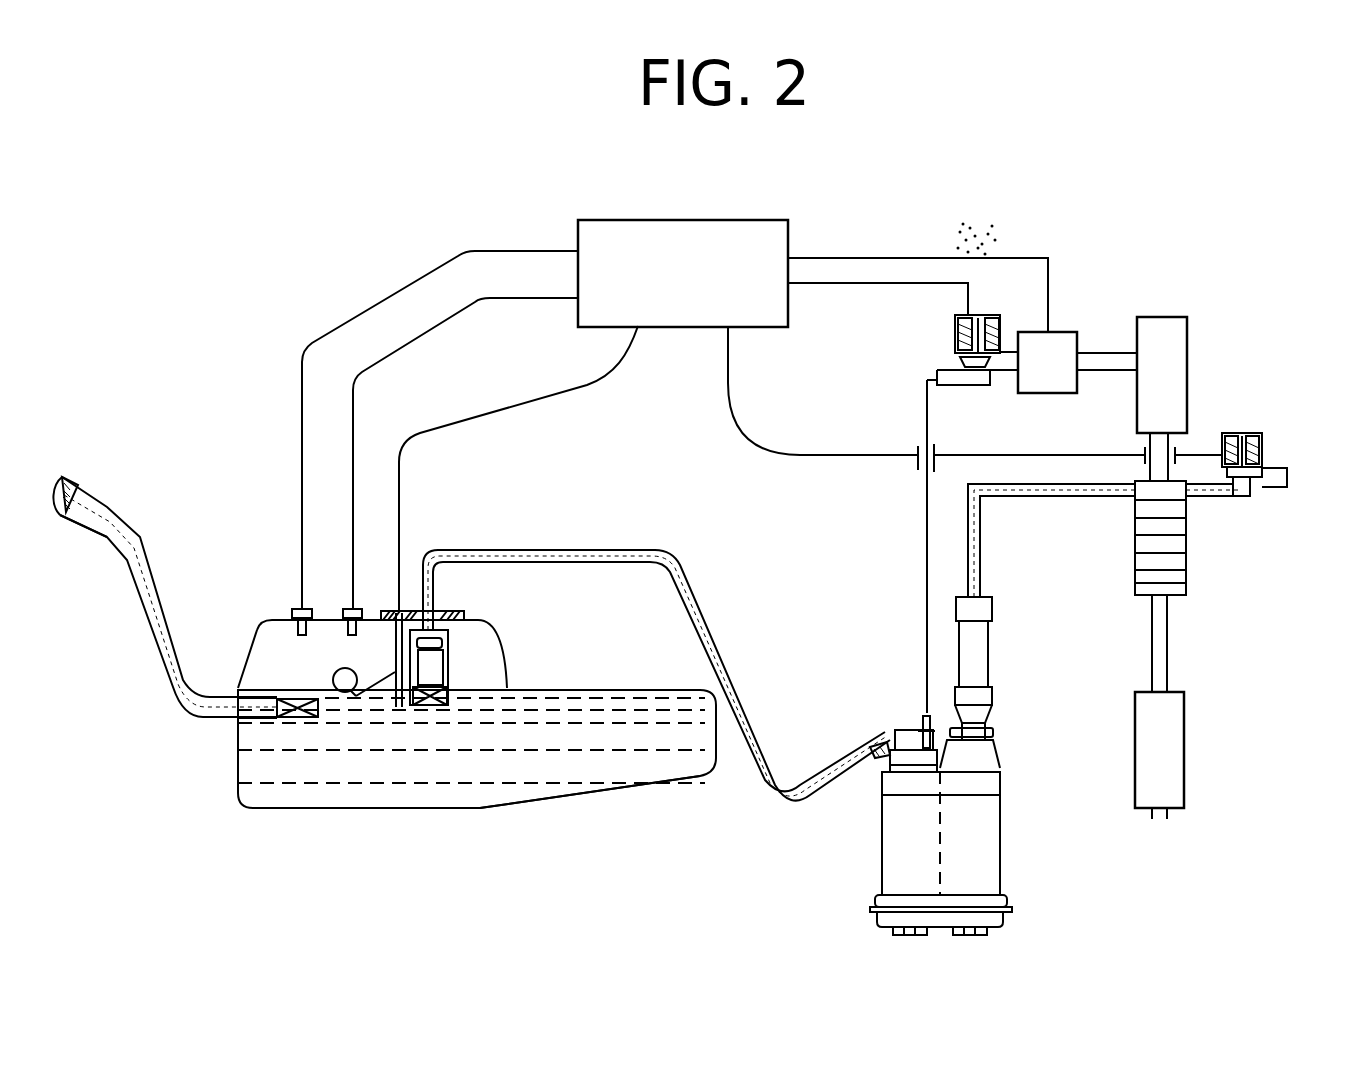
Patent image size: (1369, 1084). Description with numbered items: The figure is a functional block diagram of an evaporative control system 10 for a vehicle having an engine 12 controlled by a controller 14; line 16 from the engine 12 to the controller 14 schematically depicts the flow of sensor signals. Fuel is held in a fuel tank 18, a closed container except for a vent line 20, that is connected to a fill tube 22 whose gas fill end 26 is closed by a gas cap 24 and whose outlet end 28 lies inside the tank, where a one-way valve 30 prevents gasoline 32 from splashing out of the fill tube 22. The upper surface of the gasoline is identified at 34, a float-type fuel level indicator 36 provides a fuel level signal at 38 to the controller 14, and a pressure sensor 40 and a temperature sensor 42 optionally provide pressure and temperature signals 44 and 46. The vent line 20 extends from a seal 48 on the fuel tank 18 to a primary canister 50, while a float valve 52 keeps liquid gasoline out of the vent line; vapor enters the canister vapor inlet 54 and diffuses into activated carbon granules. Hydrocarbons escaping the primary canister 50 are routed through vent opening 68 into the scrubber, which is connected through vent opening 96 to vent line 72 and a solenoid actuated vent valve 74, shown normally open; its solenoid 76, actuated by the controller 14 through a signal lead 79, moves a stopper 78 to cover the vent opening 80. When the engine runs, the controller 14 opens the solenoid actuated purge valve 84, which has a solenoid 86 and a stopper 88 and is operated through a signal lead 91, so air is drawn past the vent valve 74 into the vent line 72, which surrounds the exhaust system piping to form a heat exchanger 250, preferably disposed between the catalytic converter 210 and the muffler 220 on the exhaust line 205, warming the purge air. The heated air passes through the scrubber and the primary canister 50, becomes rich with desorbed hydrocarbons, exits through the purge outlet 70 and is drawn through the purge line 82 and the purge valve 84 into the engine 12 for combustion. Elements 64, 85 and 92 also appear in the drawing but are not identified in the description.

The evaporative control system 10 is at (263, 352).
The engine 12 is at (1067, 340).
The controller 14 is at (780, 240).
The line 16 is at (997, 255).
The fuel tank 18 is at (617, 692).
The vent line 20 is at (565, 546).
The fill tube 22 is at (178, 630).
The gas cap 24 is at (62, 477).
The gas fill end 26 is at (80, 527).
The outlet end 28 is at (290, 720).
The one-way valve 30 is at (250, 712).
The gasoline 32 is at (668, 767).
The upper surface of the gasoline 34 is at (503, 685).
The float-type fuel level indicator 36 is at (338, 677).
The fuel level signal 38 is at (512, 408).
The pressure sensor 40 is at (358, 612).
The temperature sensor 42 is at (312, 612).
The pressure signal 44 is at (423, 343).
The temperature signal 46 is at (387, 302).
The seal 48 is at (455, 615).
The primary canister 50 is at (1010, 879).
The float valve 52 is at (450, 657).
The canister vapor inlet 54 is at (890, 733).
The pump housing 64 is at (943, 832).
The vent opening 68 is at (990, 733).
The purge outlet 70 is at (920, 718).
The vent line 72 is at (990, 481).
The solenoid actuated vent valve 74 is at (1270, 449).
The solenoid 76 is at (1250, 430).
The stopper 78 is at (1240, 493).
The signal lead 79 is at (743, 418).
The vent opening 80 is at (1230, 491).
The purge line 82 is at (925, 571).
The solenoid actuated purge valve 84 is at (946, 326).
The fuel filter 85 is at (992, 648).
The solenoid 86 is at (1002, 333).
The stopper 88 is at (958, 352).
The signal lead 91 is at (817, 285).
The pump housing top 92 is at (967, 787).
The vent opening 96 is at (990, 597).
The exhaust line 205 is at (1162, 820).
The catalytic converter 210 is at (1187, 353).
The muffler 220 is at (1186, 732).
The heat exchanger 250 is at (1135, 529).